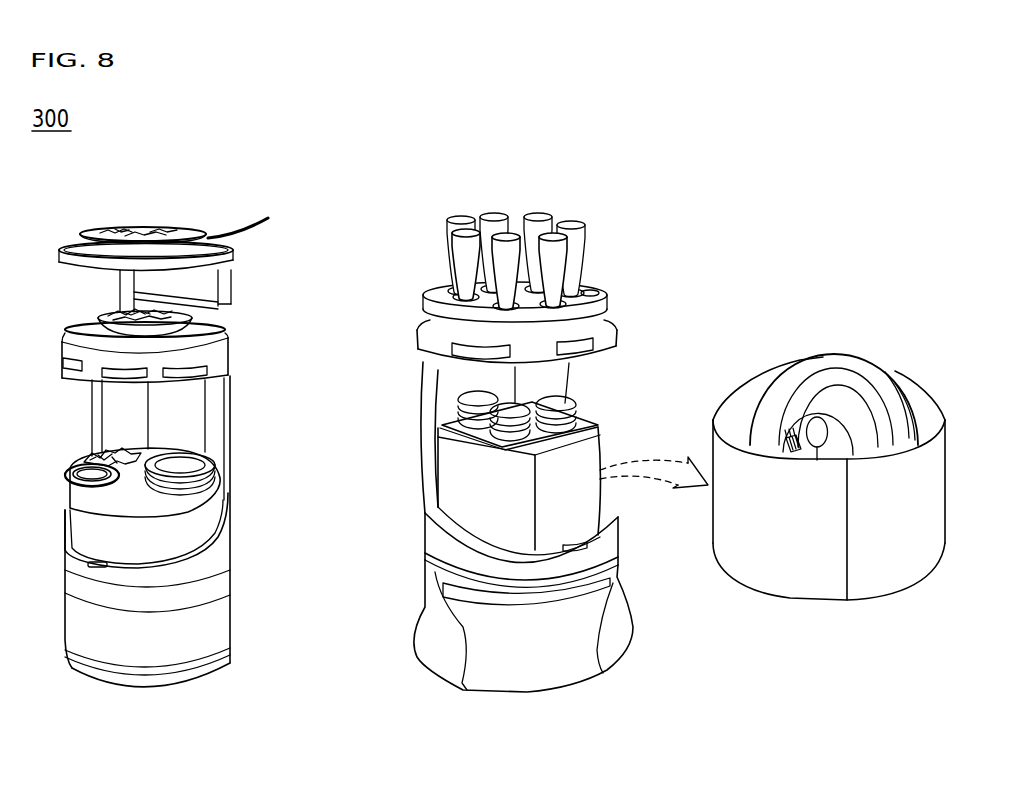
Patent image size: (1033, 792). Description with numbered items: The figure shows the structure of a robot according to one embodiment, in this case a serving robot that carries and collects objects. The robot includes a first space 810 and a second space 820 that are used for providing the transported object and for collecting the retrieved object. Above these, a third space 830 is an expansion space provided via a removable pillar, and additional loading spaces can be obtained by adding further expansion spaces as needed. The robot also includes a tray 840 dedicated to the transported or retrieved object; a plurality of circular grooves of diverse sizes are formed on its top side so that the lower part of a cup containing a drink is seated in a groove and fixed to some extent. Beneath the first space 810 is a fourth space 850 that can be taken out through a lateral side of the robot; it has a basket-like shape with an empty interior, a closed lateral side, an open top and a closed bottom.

The first space 810 is at (210, 500).
The second space 820 is at (225, 357).
The third space 830 is at (226, 256).
The tray 840 is at (437, 309).
The fourth space 850 is at (460, 488).